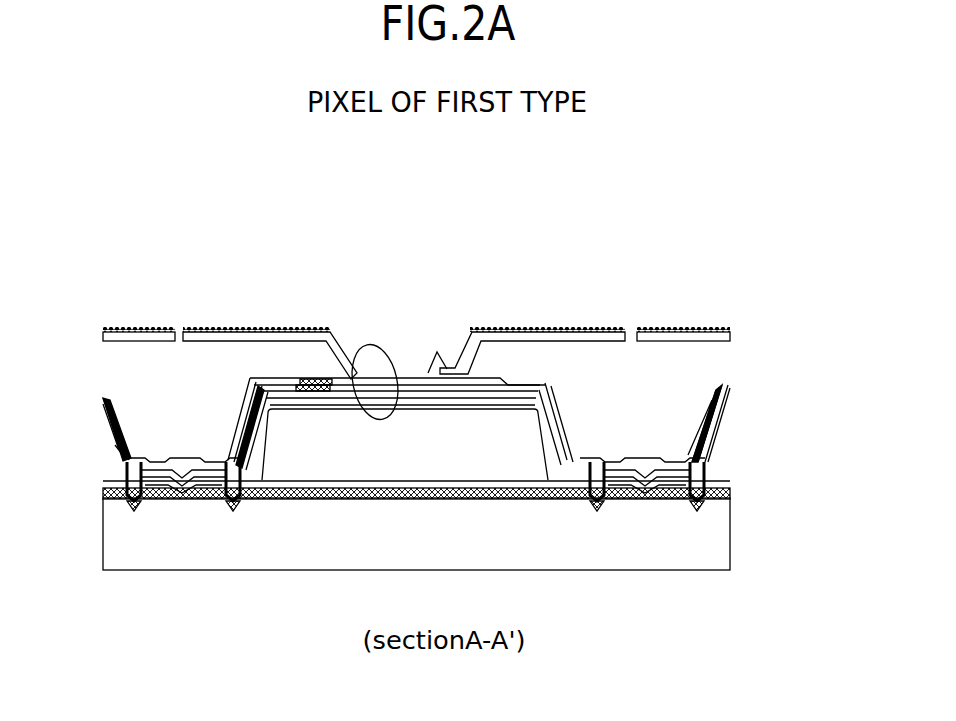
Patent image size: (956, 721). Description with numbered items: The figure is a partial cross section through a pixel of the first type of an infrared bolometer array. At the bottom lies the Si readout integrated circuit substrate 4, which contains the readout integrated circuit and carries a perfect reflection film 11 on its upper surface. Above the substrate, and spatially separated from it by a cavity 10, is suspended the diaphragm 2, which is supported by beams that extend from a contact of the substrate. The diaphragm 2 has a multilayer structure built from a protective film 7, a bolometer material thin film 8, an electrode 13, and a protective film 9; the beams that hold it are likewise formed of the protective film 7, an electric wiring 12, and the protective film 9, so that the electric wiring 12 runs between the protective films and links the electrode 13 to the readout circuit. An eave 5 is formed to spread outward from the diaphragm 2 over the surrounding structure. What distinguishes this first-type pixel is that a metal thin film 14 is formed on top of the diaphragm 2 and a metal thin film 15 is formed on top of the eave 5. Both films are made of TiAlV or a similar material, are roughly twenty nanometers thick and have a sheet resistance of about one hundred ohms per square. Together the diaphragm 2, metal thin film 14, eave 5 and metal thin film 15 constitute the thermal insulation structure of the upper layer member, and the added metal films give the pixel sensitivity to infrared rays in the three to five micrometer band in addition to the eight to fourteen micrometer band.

The diaphragm 2 is at (360, 338).
The Si readout integrated circuit substrate 4 is at (690, 530).
The eave 5 is at (538, 332).
The protective film 7 is at (272, 432).
The bolometer material thin film 8 is at (417, 378).
The protective film 9 is at (248, 382).
The cavity 10 is at (330, 408).
The perfect reflection film 11 is at (515, 502).
The electric wiring 12 is at (557, 423).
The electrode 13 is at (500, 362).
The metal thin film 14 is at (278, 345).
The metal thin film 15 is at (297, 338).